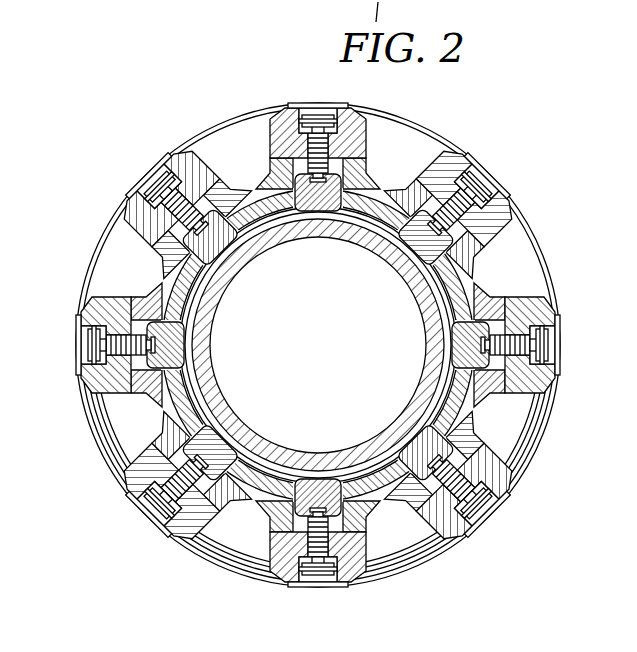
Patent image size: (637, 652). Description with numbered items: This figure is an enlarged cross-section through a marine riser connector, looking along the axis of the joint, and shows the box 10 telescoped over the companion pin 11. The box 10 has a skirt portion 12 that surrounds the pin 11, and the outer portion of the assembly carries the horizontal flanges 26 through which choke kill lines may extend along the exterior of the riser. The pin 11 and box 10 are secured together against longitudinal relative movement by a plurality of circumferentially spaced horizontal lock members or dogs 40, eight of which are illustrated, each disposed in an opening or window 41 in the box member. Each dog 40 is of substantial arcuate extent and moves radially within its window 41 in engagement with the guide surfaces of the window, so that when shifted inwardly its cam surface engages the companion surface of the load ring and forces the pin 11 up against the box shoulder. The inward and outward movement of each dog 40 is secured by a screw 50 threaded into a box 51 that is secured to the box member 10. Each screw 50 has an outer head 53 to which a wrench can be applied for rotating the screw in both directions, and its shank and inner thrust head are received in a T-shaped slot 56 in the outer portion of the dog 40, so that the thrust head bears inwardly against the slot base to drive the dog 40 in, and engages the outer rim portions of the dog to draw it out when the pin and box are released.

The box 10 is at (253, 500).
The pin 11 is at (237, 398).
The skirt portion 12 is at (374, 193).
The horizontal flanges 26 is at (517, 430).
The lock dogs 40 is at (437, 263).
The windows 41 is at (502, 222).
The screw 50 is at (125, 362).
The box 51 is at (145, 225).
The outer head 53 is at (160, 513).
The T-shaped slot 56 is at (263, 200).